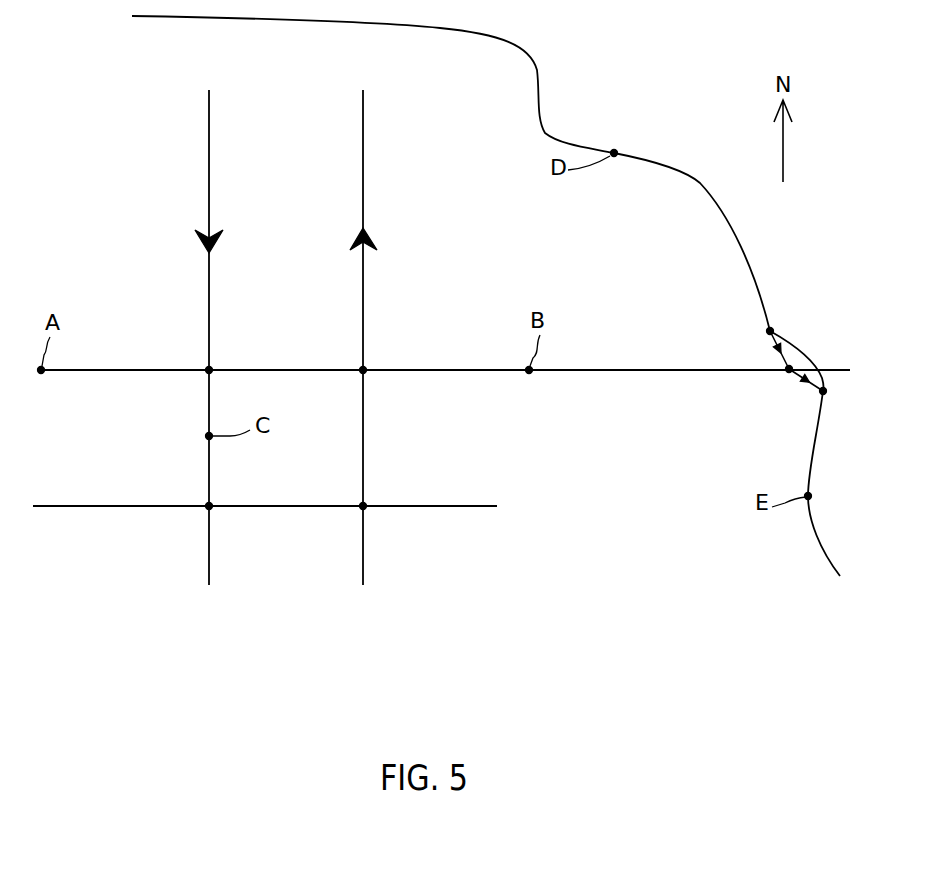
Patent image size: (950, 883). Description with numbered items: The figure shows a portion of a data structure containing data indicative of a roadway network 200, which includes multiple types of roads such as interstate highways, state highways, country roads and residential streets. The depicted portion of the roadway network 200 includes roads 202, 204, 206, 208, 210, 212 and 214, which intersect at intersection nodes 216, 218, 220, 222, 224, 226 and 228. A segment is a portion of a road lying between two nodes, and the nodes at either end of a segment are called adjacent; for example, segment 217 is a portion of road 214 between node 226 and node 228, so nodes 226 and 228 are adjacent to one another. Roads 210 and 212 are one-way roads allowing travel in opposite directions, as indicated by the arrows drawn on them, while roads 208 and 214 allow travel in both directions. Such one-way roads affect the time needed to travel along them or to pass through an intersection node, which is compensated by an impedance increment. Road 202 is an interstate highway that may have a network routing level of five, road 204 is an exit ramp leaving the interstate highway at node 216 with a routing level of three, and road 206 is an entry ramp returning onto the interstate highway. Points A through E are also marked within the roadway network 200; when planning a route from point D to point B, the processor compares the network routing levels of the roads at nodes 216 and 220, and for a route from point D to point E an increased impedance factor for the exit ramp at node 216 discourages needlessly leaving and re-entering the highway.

The roadway network 200 is at (395, 625).
The road 202 is at (652, 157).
The road 204 is at (772, 341).
The road 206 is at (790, 383).
The road 208 is at (600, 372).
The road 210 is at (363, 293).
The road 212 is at (209, 293).
The road 214 is at (470, 503).
The intersection node 216 is at (774, 327).
The segment 217 is at (287, 508).
The intersection node 218 is at (828, 392).
The intersection node 220 is at (786, 371).
The intersection node 222 is at (363, 370).
The intersection node 224 is at (209, 370).
The intersection node 226 is at (363, 506).
The intersection node 228 is at (209, 506).